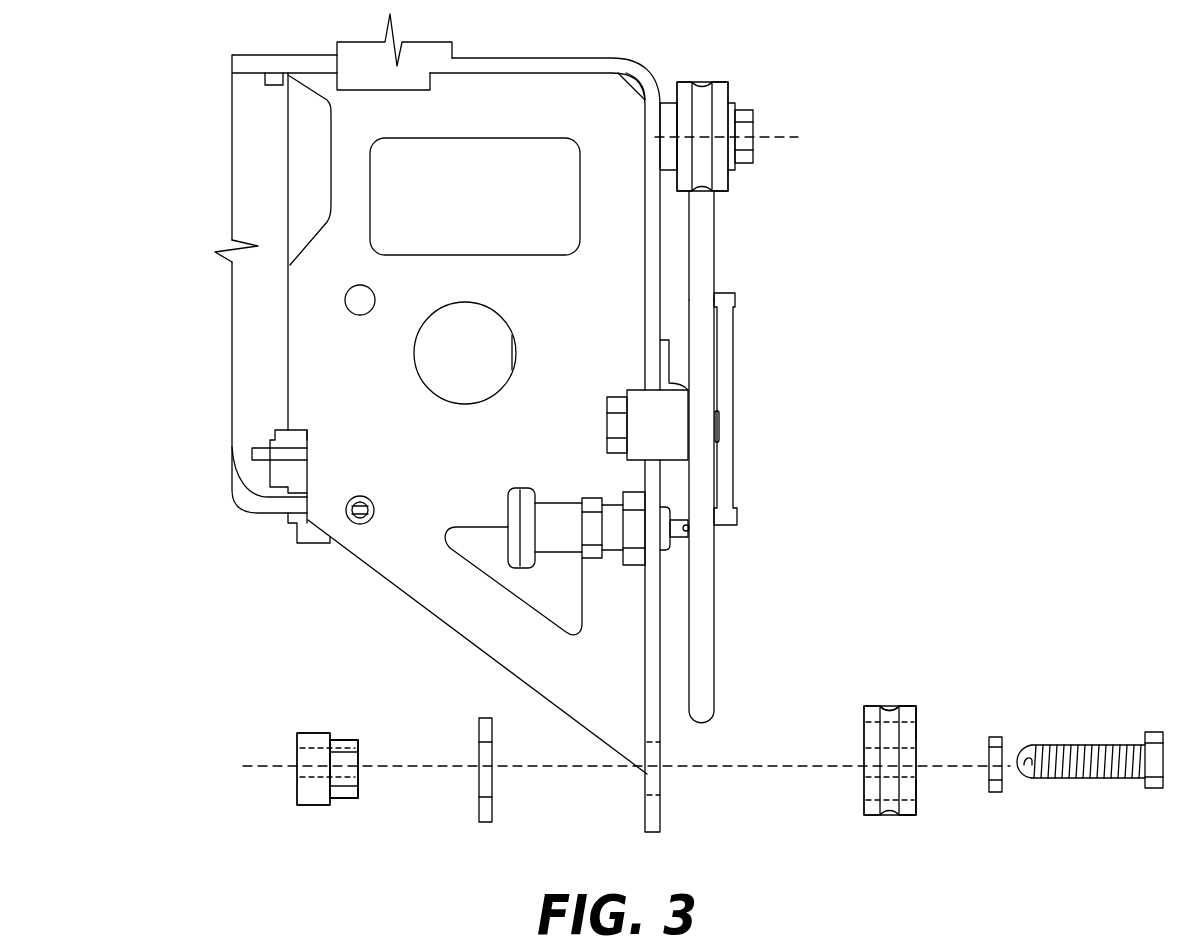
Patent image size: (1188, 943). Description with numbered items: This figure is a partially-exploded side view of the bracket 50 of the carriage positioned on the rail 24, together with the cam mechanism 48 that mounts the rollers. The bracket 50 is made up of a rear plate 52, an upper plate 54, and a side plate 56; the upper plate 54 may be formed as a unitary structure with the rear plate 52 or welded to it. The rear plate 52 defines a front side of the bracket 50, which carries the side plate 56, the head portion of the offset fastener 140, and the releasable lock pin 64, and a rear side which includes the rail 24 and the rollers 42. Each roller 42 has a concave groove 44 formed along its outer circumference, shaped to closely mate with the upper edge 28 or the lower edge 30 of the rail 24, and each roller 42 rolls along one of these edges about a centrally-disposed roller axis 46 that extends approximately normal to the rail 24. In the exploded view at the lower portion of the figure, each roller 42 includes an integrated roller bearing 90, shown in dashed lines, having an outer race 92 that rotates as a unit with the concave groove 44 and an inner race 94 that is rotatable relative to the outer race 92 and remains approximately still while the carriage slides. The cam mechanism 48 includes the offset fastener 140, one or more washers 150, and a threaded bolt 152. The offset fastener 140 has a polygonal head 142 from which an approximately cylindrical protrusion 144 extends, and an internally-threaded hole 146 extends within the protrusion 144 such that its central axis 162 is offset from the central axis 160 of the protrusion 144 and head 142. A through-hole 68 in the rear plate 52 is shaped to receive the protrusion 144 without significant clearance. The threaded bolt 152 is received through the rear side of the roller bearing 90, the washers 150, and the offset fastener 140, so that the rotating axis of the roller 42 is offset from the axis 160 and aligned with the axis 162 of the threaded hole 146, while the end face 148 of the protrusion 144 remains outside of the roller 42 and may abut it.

The rail 24 is at (706, 252).
The upper edge 28 is at (700, 191).
The lower edge 30 is at (702, 724).
The roller 42 is at (728, 92).
The concave groove 44 is at (700, 95).
The roller axis 46 is at (795, 135).
The cam mechanism 48 is at (273, 739).
The bracket 50 is at (216, 70).
The rear plate 52 is at (655, 298).
The upper plate 54 is at (527, 59).
The side plate 56 is at (432, 590).
The lock pin 64 is at (530, 565).
The through-hole 68 is at (646, 788).
The roller bearing 90 is at (912, 734).
The outer race 92 is at (918, 712).
The inner race 94 is at (912, 776).
The offset fastener 140 is at (330, 806).
The head 142 is at (312, 800).
The protrusion 144 is at (663, 108).
The internally-threaded hole 146 is at (356, 752).
The end face 148 is at (346, 789).
The washer 150 is at (995, 793).
The threaded bolt 152 is at (745, 165).
The central axis 160 is at (262, 769).
The central axis 162 is at (438, 762).